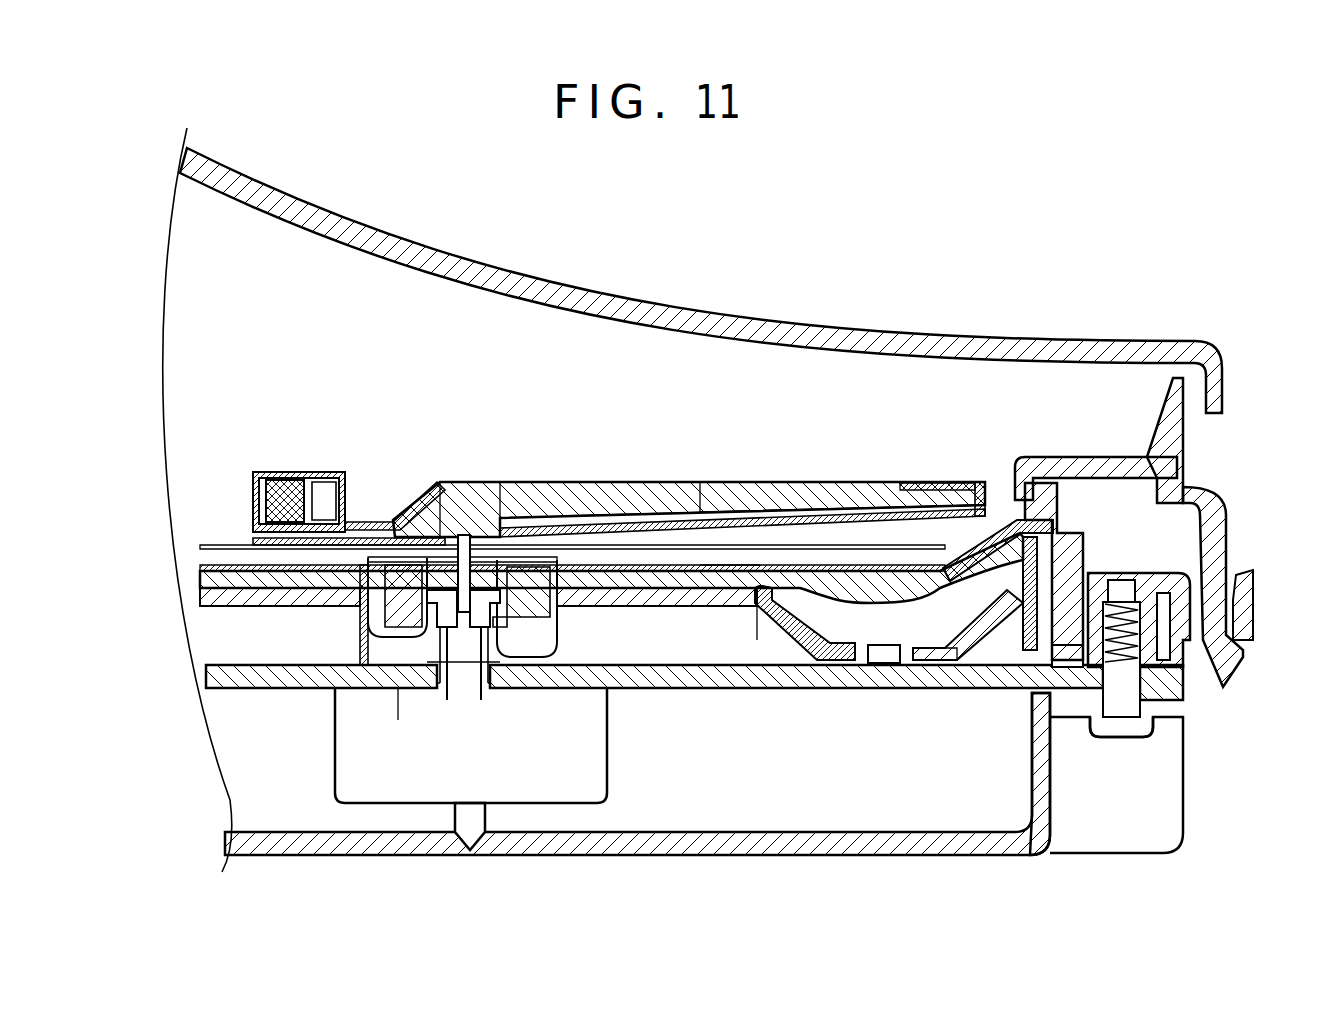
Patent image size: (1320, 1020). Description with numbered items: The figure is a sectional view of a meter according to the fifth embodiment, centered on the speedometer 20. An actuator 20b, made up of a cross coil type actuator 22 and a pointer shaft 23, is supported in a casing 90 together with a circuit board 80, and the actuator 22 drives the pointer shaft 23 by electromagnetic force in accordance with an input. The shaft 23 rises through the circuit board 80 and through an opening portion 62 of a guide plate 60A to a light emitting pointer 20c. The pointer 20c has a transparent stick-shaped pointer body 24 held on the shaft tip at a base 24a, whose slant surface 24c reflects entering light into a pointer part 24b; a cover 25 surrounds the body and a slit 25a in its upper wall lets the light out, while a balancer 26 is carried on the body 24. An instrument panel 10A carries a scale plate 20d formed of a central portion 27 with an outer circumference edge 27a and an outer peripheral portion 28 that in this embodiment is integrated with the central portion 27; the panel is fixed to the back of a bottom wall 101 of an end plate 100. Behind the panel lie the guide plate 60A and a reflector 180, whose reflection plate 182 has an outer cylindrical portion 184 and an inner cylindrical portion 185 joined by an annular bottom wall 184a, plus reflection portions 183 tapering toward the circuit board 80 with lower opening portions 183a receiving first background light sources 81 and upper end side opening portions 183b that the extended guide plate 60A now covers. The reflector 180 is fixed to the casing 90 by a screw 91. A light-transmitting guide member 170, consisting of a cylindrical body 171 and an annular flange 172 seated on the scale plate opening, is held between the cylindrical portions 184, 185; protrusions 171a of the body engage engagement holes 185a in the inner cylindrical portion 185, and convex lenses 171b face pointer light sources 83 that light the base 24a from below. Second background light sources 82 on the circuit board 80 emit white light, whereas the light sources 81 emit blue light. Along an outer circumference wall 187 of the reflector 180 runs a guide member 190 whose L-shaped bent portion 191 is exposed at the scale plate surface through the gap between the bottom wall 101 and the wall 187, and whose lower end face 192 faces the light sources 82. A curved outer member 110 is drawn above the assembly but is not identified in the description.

The outer cover 110 is at (288, 172).
The speedometer 20 is at (466, 476).
The actuator 20b is at (612, 789).
The light emitting pointer 20c is at (594, 476).
The scale plate 20d is at (712, 560).
The cross coil type actuator 22 is at (575, 780).
The pointer shaft 23 is at (400, 528).
The pointer body 24 is at (655, 500).
The base 24a is at (452, 520).
The pointer part 24b is at (846, 500).
The slant surface 24c is at (410, 516).
The cover 25 is at (505, 482).
The slit 25a is at (910, 484).
The balancer 26 is at (285, 471).
The central portion 27 is at (775, 570).
The outer circumference edge 27a is at (940, 570).
The outer peripheral portion 28 is at (996, 520).
The guide plate 60A is at (240, 596).
The opening portion 62 is at (393, 553).
The circuit board 80 is at (954, 700).
The light sources 81 is at (893, 688).
The light sources 82 is at (1066, 668).
The light sources 83 is at (400, 690).
The casing 90 is at (1047, 858).
The screw 91 is at (1125, 703).
The end plate 100 is at (1195, 461).
The bottom wall 101 is at (1110, 456).
The instrument panel 10A is at (874, 530).
The guide member 170 is at (440, 662).
The cylindrical body 171 is at (400, 632).
The protrusions 171a is at (468, 690).
The convex lenses 171b is at (455, 672).
The annular flange 172 is at (560, 547).
The reflector 180 is at (762, 634).
The reflection plate 182 is at (400, 600).
The reflection portions 183 is at (788, 684).
The opening portion 183a is at (896, 666).
The upper end side opening portions 183b is at (758, 604).
The outer cylindrical portion 184 is at (435, 645).
The annular bottom wall 184a is at (533, 690).
The inner cylindrical portion 185 is at (445, 665).
The engagement holes 185a is at (492, 555).
The outer circumference wall 187 is at (1000, 690).
The guide member 190 is at (1095, 550).
The L-shaped bent portion 191 is at (1045, 500).
The lower end face 192 is at (1101, 713).